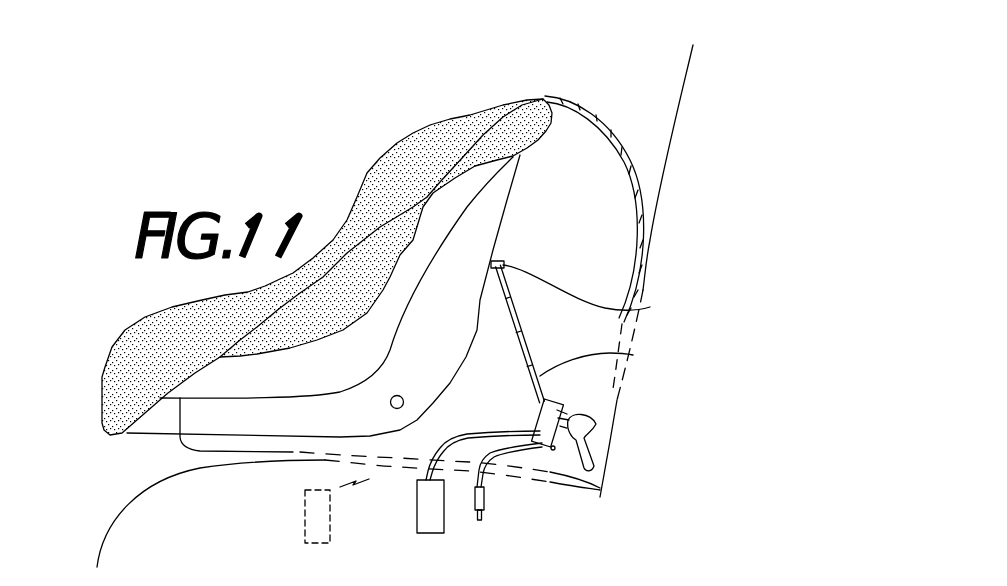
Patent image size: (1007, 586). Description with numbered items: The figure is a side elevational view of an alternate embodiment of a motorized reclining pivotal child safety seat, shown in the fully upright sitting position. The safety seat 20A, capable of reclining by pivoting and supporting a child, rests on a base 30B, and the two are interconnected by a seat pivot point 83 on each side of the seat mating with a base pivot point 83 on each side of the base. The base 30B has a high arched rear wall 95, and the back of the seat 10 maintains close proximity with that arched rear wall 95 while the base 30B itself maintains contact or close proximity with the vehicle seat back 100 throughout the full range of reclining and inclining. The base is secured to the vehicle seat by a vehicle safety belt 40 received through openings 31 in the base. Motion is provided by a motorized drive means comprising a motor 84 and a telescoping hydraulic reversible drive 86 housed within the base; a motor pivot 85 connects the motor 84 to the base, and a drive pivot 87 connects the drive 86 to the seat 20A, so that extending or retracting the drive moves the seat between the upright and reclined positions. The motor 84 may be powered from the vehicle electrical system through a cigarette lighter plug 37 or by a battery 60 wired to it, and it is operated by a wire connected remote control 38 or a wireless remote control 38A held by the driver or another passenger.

The back of the seat 10 is at (550, 124).
The safety seat 20A is at (453, 117).
The arched rear wall 95 is at (620, 118).
The vehicle seat back 100 is at (683, 72).
The drive pivot 87 is at (592, 291).
The telescoping hydraulic reversible drive 86 is at (608, 364).
The motor 84 is at (533, 419).
The battery 60 is at (556, 408).
The openings 31 is at (582, 418).
The vehicle safety belt 40 is at (595, 447).
The motor pivot 85 is at (598, 490).
The base 30B is at (178, 438).
The pivot point 83 is at (402, 395).
The wire connected remote control 38 is at (413, 533).
The wireless remote control 38A is at (306, 541).
The cigarette lighter plug 37 is at (488, 507).